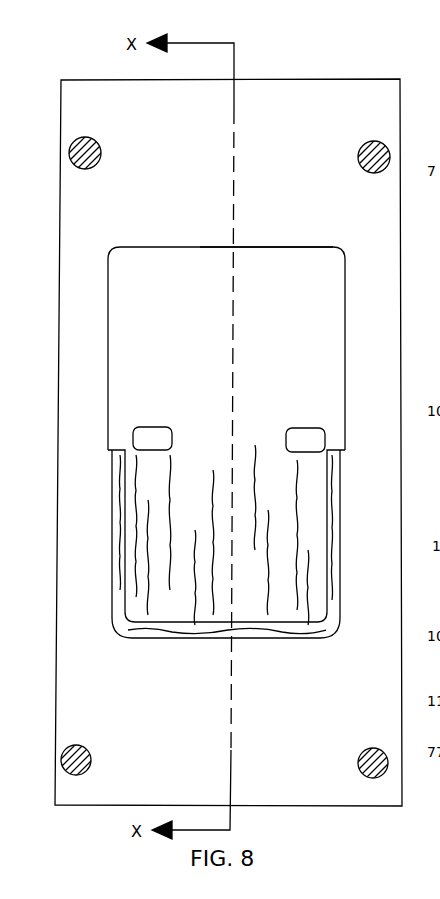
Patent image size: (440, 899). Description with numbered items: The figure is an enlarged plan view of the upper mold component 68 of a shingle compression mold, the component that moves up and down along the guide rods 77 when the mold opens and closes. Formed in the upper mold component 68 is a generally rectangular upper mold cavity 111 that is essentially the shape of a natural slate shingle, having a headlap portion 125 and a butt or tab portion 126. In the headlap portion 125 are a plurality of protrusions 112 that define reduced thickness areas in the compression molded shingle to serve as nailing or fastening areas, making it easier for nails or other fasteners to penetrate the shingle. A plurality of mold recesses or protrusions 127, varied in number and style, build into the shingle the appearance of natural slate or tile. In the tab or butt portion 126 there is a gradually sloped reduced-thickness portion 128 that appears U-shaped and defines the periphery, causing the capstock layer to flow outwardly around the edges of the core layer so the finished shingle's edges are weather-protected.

The upper mold component 68 is at (76, 210).
The guide rods 77 is at (73, 142).
The upper mold cavity 111 is at (128, 297).
The protrusions 112 is at (152, 437).
The headlap portion 125 is at (258, 254).
The butt or tab portion 126 is at (187, 500).
The mold recesses or protrusions 127 is at (213, 527).
The sloped reduced-thickness portion 128 is at (125, 622).